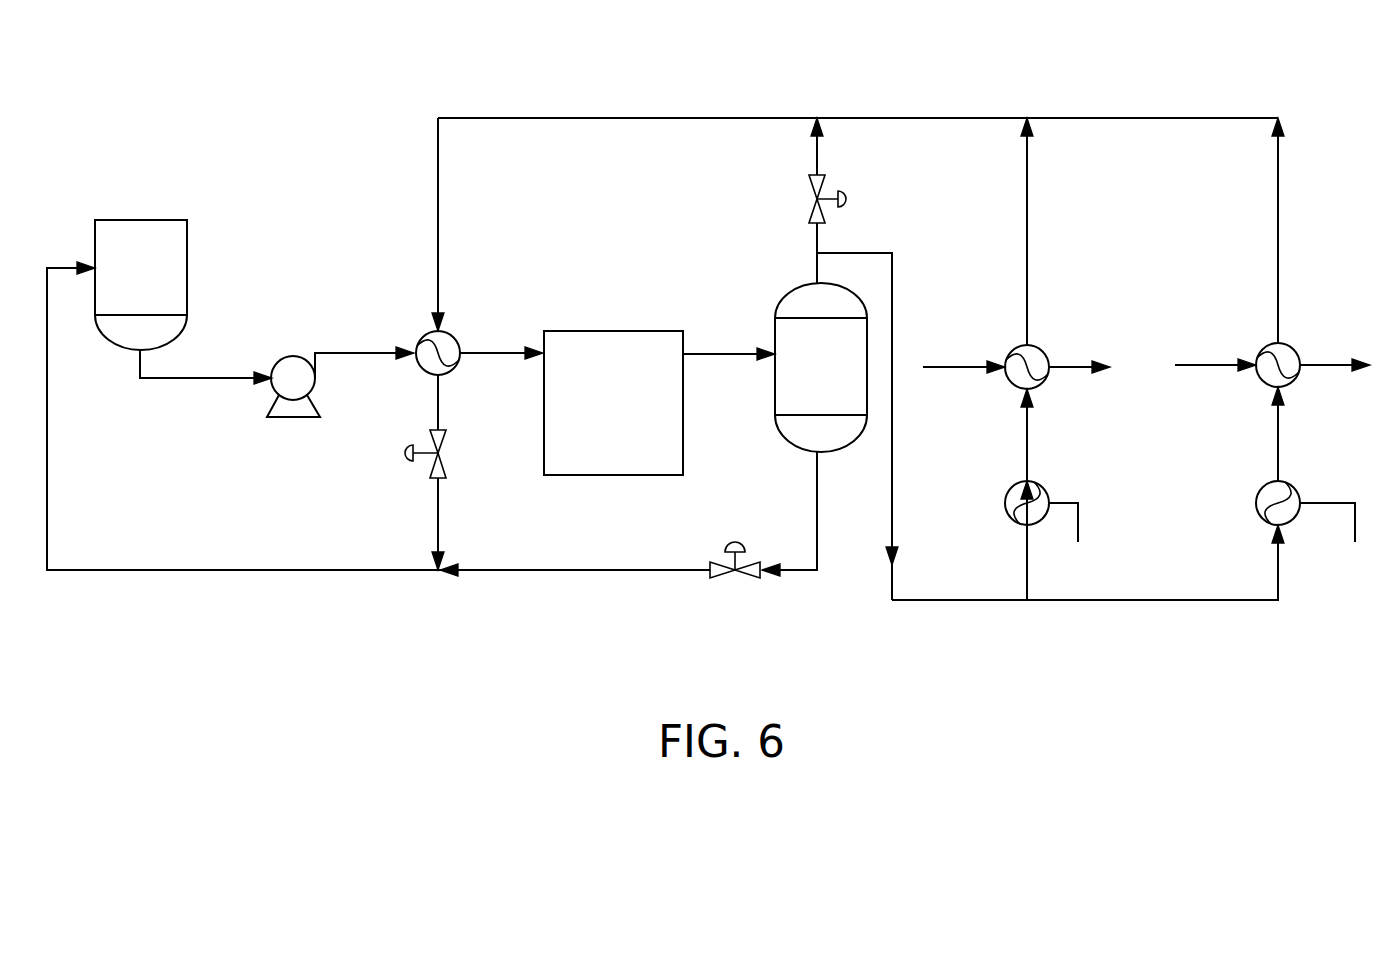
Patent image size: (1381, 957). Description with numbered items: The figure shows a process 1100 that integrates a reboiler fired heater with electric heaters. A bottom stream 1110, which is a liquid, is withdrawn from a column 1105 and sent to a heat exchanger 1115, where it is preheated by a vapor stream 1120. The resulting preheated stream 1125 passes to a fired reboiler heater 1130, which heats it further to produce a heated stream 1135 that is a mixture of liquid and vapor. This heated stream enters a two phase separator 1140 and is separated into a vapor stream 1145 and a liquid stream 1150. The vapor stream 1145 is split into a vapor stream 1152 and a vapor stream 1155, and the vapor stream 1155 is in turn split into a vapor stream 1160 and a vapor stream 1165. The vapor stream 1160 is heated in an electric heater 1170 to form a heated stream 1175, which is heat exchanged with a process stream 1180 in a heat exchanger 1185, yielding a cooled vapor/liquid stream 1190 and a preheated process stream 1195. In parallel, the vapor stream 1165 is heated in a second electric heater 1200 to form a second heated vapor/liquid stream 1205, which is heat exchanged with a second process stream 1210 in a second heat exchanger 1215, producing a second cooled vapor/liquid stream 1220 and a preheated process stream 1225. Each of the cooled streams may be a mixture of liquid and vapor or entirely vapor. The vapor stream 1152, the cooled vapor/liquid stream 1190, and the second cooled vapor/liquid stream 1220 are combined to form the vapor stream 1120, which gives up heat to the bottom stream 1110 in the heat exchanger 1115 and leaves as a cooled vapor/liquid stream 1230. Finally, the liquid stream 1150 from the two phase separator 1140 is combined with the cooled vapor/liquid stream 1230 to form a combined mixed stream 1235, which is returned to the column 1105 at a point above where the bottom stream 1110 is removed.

The process 1100 is at (508, 100).
The column 1105 is at (143, 220).
The bottom stream 1110 is at (237, 378).
The heat exchanger 1115 is at (436, 330).
The vapor stream 1120 is at (440, 233).
The preheated stream 1125 is at (505, 351).
The fired reboiler heater 1130 is at (615, 331).
The heated stream 1135 is at (731, 353).
The two phase separator 1140 is at (858, 298).
The vapor stream 1145 is at (817, 266).
The liquid stream 1150 is at (817, 510).
The vapor stream 1152 is at (812, 236).
The vapor stream 1155 is at (880, 253).
The vapor stream 1160 is at (1026, 563).
The vapor stream 1165 is at (1173, 598).
The electric heater 1170 is at (1016, 484).
The heated stream 1175 is at (1026, 428).
The process stream 1180 is at (981, 370).
The heat exchanger 1185 is at (1024, 346).
The cooled vapor/liquid stream 1190 is at (1030, 238).
The preheated process stream 1195 is at (1074, 363).
The second electric heater 1200 is at (1266, 484).
The second heated vapor/liquid stream 1205 is at (1282, 443).
The second process stream 1210 is at (1208, 365).
The second heat exchanger 1215 is at (1276, 344).
The second cooled vapor/liquid stream 1220 is at (1282, 254).
The preheated process stream 1225 is at (1337, 363).
The cooled vapor/liquid stream 1230 is at (440, 403).
The combined mixed stream 1235 is at (308, 568).